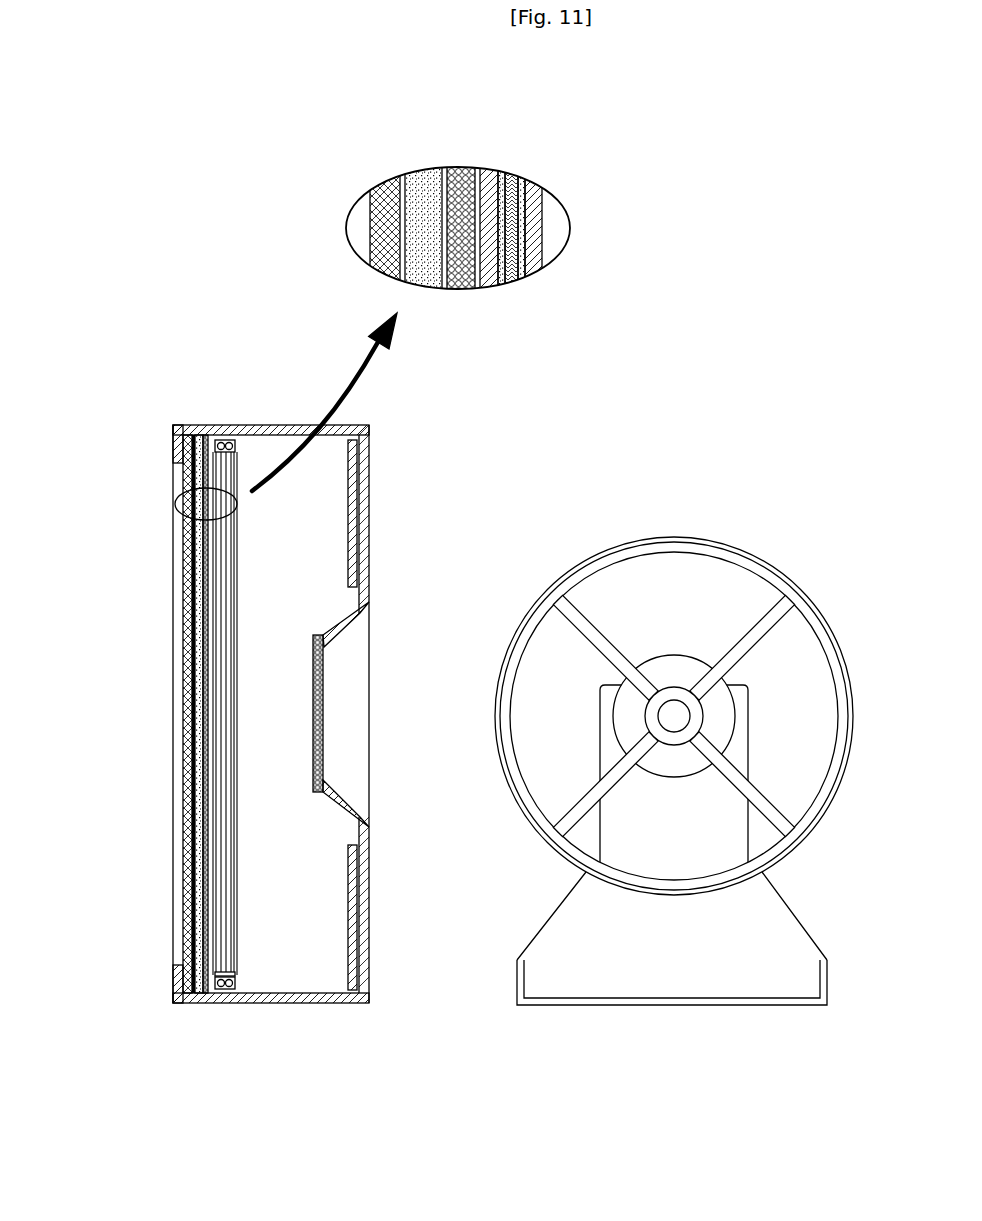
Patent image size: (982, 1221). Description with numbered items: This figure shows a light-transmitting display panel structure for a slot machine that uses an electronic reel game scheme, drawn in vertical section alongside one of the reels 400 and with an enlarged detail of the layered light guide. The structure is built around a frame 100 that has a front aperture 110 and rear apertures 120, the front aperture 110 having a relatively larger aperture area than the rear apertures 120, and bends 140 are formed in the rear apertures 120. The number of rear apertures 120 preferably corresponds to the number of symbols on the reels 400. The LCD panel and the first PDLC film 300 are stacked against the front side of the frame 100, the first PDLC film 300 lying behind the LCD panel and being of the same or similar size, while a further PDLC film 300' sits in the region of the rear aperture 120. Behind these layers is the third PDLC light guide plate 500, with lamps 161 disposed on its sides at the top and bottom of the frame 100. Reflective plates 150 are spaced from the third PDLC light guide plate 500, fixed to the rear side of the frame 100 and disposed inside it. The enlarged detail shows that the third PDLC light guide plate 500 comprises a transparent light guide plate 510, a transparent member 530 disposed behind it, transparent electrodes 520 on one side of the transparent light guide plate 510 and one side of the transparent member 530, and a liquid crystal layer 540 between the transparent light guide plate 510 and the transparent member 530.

The frame 100 is at (286, 410).
The front aperture 110 is at (177, 697).
The rear aperture 120 is at (345, 686).
The bend 140 is at (332, 798).
The reflective plate 150 is at (358, 492).
The lamp 161 is at (226, 440).
The first PDLC film 300 is at (467, 189).
The PDLC film 300' is at (395, 713).
The reel 400 is at (713, 512).
The third PDLC light guide plate 500 is at (560, 72).
The transparent light guide plate 510 is at (487, 173).
The transparent electrode 520 is at (502, 286).
The transparent member 530 is at (542, 211).
The liquid crystal layer 540 is at (510, 177).